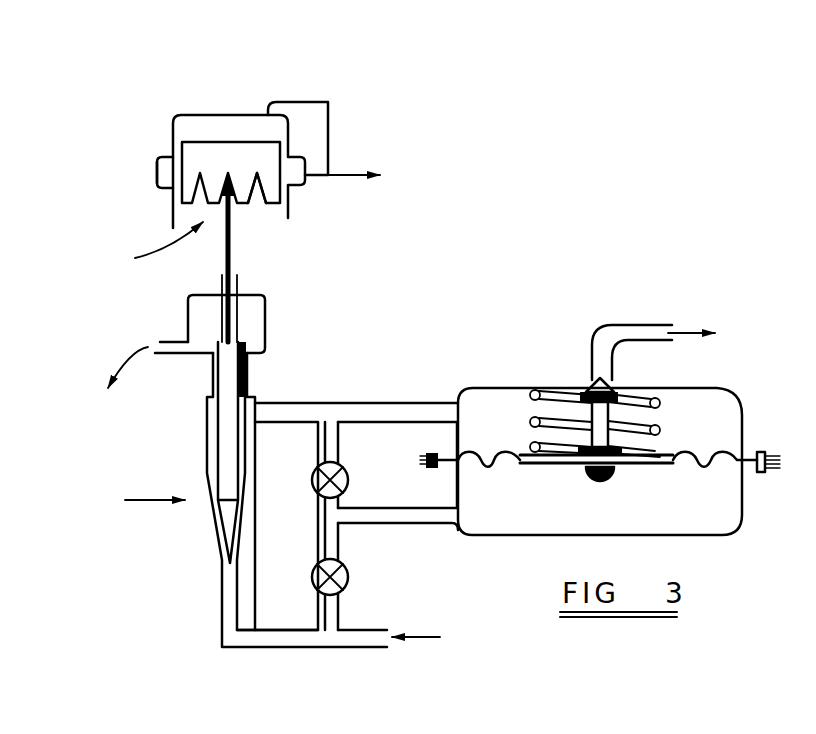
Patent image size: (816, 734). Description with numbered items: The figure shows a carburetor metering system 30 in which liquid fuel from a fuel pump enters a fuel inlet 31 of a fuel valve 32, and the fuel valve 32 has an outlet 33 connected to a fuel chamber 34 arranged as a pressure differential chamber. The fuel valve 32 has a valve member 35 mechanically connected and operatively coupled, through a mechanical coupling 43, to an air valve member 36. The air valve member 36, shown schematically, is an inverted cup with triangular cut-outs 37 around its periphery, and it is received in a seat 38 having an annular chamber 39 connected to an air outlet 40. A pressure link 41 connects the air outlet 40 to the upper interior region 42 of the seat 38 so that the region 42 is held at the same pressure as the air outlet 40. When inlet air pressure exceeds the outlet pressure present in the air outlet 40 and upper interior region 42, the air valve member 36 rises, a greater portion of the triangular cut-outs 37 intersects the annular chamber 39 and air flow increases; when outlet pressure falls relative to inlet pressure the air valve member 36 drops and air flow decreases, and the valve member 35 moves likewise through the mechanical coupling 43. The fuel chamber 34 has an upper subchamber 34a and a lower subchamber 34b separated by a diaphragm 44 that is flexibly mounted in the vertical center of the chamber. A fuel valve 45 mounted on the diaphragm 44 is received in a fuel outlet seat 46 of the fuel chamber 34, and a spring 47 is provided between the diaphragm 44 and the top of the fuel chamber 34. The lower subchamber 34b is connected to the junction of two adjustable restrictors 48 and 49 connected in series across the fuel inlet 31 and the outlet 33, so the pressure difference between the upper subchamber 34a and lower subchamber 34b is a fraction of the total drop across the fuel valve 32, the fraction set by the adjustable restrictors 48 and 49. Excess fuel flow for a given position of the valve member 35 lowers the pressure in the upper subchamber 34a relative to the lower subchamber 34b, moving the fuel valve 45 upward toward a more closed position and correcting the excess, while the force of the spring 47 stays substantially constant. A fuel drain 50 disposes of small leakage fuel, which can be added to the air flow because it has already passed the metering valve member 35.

The carburetor metering system 30 is at (533, 280).
The fuel inlet 31 is at (378, 637).
The fuel valve 32 is at (232, 494).
The outlet 33 is at (283, 404).
The fuel chamber 34 is at (510, 388).
The upper subchamber 34a is at (517, 441).
The lower subchamber 34b is at (573, 519).
The valve member 35 is at (225, 470).
The air valve member 36 is at (268, 185).
The triangular cut-outs 37 is at (258, 197).
The seat 38 is at (173, 135).
The annular chamber 39 is at (157, 176).
The air outlet 40 is at (353, 180).
The pressure link 41 is at (298, 100).
The upper interior region 42 is at (221, 125).
The mechanical coupling 43 is at (232, 310).
The diaphragm 44 is at (712, 437).
The fuel valve 45 is at (607, 390).
The fuel outlet seat 46 is at (587, 387).
The spring 47 is at (660, 427).
The adjustable restrictor 48 is at (348, 478).
The adjustable restrictor 49 is at (348, 574).
The fuel drain 50 is at (158, 344).